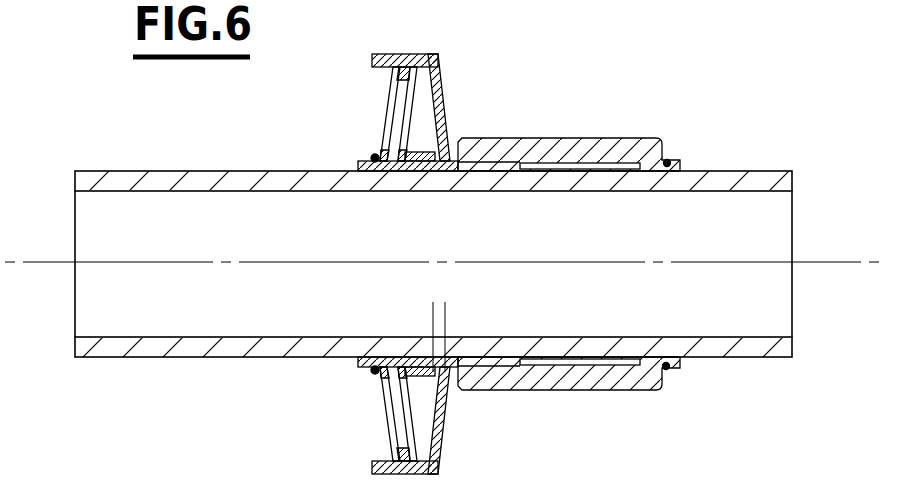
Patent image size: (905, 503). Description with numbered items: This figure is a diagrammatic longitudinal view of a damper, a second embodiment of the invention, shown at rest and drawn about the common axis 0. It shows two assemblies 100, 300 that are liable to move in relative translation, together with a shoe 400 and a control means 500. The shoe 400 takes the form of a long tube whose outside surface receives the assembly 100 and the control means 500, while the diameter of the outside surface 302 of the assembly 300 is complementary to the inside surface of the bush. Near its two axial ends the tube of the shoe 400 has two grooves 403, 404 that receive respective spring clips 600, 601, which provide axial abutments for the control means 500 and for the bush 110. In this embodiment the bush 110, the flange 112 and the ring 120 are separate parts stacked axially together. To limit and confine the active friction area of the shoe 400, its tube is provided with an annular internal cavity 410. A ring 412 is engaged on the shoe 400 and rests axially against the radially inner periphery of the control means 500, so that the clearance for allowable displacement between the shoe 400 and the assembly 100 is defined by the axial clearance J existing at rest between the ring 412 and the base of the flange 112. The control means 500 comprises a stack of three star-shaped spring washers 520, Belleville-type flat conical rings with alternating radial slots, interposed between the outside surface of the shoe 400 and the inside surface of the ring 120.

The axis of the tube 0 is at (45, 261).
The assembly 100 is at (549, 127).
The bush 110 is at (603, 143).
The flange 112 is at (447, 100).
The ring 120 is at (372, 54).
The assembly 300 is at (204, 158).
The outside surface 302 is at (100, 160).
The shoe 400 is at (488, 364).
The groove 403 is at (368, 344).
The groove 404 is at (668, 344).
The annular internal cavity 410 is at (604, 366).
The ring 412 is at (424, 163).
The control means 500 is at (372, 412).
The star-shaped spring washer 520 is at (370, 125).
The spring clip 600 is at (372, 373).
The spring clip 601 is at (669, 368).
The axial clearance J is at (415, 307).